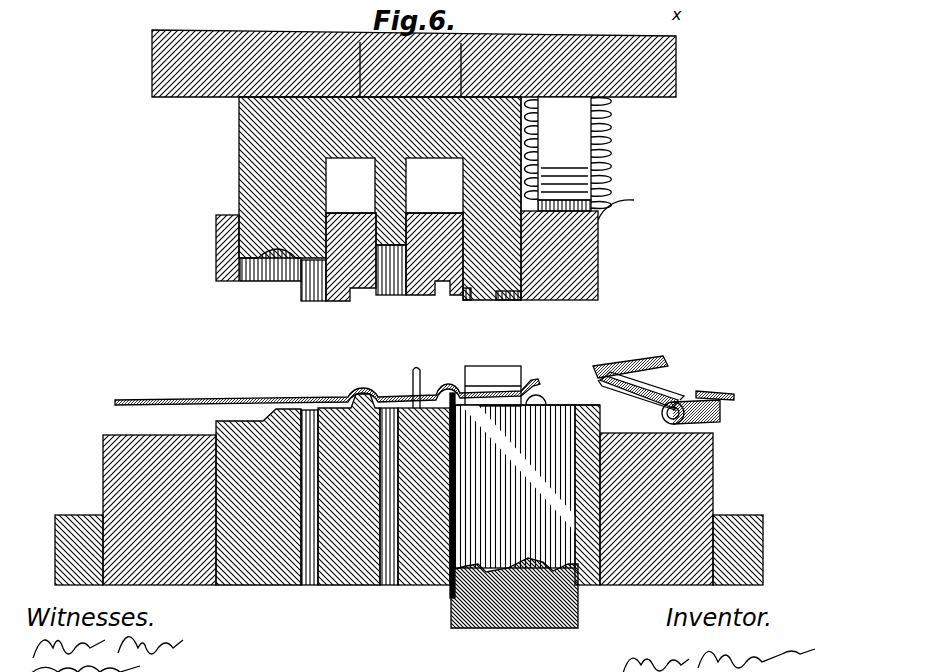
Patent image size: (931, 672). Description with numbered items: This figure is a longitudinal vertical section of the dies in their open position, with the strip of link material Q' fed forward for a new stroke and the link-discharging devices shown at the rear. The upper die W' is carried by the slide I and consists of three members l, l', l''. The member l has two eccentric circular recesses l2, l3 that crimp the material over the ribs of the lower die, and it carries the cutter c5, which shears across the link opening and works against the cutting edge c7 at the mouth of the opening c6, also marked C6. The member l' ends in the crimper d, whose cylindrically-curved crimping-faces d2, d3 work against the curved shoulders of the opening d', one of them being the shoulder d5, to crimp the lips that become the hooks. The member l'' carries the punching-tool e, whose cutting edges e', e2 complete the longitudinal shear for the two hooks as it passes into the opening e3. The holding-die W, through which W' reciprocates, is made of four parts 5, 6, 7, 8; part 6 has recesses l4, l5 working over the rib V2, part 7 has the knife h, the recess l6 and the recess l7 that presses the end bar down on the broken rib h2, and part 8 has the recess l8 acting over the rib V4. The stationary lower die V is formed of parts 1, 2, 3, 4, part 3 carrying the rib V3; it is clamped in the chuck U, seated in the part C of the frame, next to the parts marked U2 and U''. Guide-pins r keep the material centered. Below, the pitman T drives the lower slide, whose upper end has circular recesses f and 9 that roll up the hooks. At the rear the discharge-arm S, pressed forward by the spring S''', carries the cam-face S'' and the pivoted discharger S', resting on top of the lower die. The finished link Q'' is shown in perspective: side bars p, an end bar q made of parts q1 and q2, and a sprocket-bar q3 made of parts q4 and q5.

The slide I is at (158, 62).
The cutting edge h is at (363, 38).
The die W' is at (380, 198).
The member of die W' l is at (223, 179).
The member of die W' l' is at (350, 185).
The member of die W' l'' is at (434, 185).
The discharge-arm S is at (548, 231).
The spring S''' is at (589, 153).
The cam-face S'' is at (624, 205).
The part of die W 5 is at (227, 248).
The part of die W 6 is at (351, 257).
The part of die W 7 is at (434, 254).
The part of die W 8 is at (559, 255).
The holding-die W is at (372, 265).
The punching-tool e is at (493, 238).
The crimper d is at (391, 261).
The cutter c5 is at (292, 265).
The circular recess l2 is at (258, 274).
The circular recess l3 is at (266, 274).
The cutting edge c7 is at (310, 278).
The recess l4 is at (345, 282).
The recess l5 is at (362, 282).
The crimping-face d2 is at (380, 288).
The crimping-face d3 is at (392, 288).
The curved recess l6 is at (434, 275).
The curved recess l7 is at (455, 292).
The cutting edges e' is at (473, 306).
The cutting edges e2 is at (473, 358).
The recess l8 is at (552, 292).
The strip of link material Q' is at (327, 392).
The discharger S' is at (493, 386).
The rib V2 is at (267, 397).
The support U2 is at (296, 378).
The opening C6 is at (305, 402).
The curved shoulder d5 is at (378, 396).
The support U'' is at (253, 415).
The guide-pin r is at (415, 373).
The rib V3 is at (432, 384).
The broken rib h2 is at (450, 380).
The rib V4 is at (543, 391).
The holding chuck U is at (401, 509).
The frame part C is at (65, 530).
The part of die V 1 is at (258, 497).
The part of die V 2 is at (349, 489).
The opening d' is at (391, 512).
The part of die V 3 is at (424, 496).
The circular recess f is at (441, 590).
The opening e3 is at (527, 486).
The pitman T is at (507, 612).
The circular recess 9 is at (530, 562).
The part of die V 4 is at (587, 495).
The stationary die V is at (258, 565).
The opening c6 is at (302, 575).
The end bar q is at (592, 374).
The end bar part q1 is at (612, 356).
The hook part q2 is at (640, 356).
The side bars p is at (628, 388).
The link Q'' is at (715, 377).
The sprocket-bar q3 is at (716, 384).
The sprocket-bar part q4 is at (728, 389).
The hook part q5 is at (714, 408).